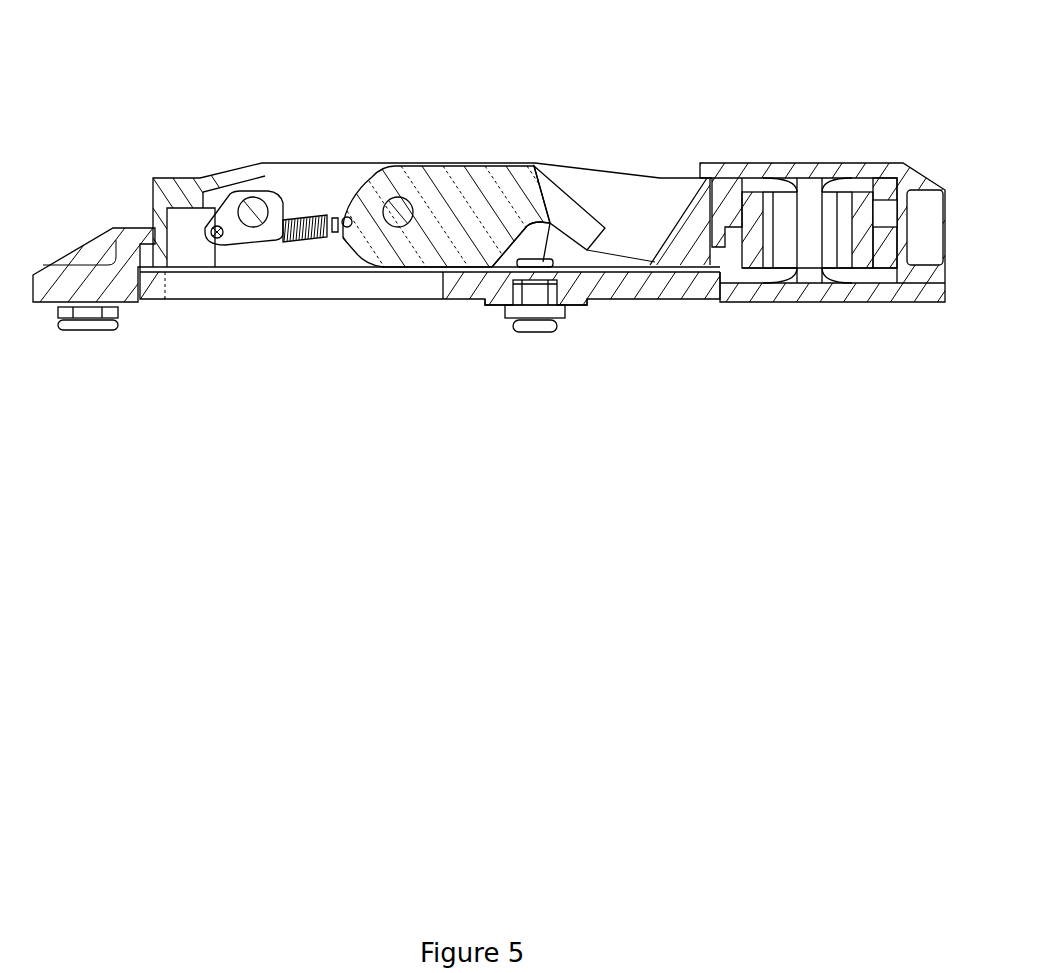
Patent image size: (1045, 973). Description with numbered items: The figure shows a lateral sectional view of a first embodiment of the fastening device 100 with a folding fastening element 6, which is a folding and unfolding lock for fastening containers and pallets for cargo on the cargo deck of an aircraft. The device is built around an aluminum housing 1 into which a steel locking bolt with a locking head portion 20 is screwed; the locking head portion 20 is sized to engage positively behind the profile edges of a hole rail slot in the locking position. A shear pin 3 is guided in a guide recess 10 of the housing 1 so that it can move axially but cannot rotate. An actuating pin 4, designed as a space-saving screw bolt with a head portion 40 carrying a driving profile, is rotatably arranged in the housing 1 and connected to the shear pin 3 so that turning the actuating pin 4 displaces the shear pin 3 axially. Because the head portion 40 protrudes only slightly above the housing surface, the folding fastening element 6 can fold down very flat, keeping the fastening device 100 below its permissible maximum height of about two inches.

The fastening device 100 is at (243, 126).
The folding fastening element 6 is at (458, 192).
The head portion 40 is at (541, 258).
The actuating pin 4 is at (505, 304).
The guide recess 10 is at (560, 297).
The housing 1 is at (630, 292).
The shear pin 3 is at (547, 320).
The locking head portion 20 is at (542, 325).